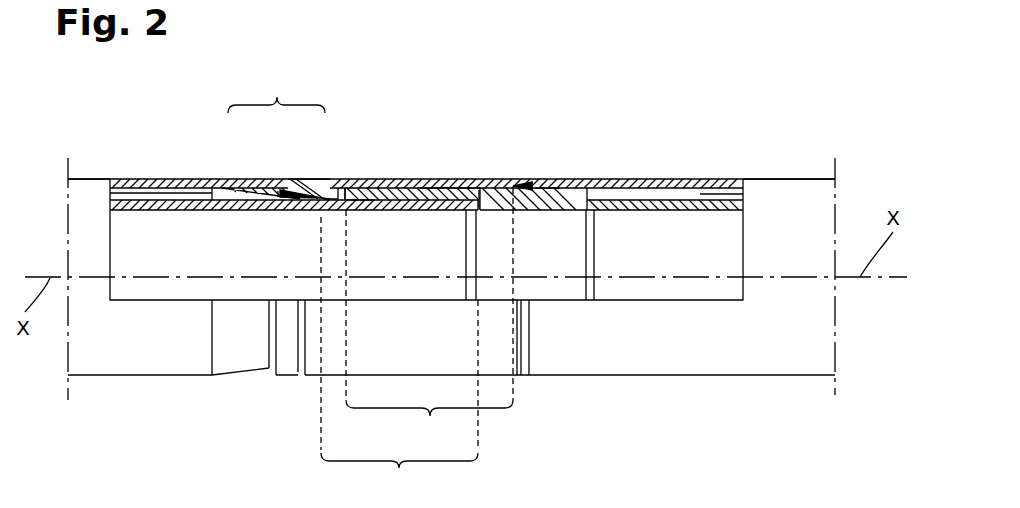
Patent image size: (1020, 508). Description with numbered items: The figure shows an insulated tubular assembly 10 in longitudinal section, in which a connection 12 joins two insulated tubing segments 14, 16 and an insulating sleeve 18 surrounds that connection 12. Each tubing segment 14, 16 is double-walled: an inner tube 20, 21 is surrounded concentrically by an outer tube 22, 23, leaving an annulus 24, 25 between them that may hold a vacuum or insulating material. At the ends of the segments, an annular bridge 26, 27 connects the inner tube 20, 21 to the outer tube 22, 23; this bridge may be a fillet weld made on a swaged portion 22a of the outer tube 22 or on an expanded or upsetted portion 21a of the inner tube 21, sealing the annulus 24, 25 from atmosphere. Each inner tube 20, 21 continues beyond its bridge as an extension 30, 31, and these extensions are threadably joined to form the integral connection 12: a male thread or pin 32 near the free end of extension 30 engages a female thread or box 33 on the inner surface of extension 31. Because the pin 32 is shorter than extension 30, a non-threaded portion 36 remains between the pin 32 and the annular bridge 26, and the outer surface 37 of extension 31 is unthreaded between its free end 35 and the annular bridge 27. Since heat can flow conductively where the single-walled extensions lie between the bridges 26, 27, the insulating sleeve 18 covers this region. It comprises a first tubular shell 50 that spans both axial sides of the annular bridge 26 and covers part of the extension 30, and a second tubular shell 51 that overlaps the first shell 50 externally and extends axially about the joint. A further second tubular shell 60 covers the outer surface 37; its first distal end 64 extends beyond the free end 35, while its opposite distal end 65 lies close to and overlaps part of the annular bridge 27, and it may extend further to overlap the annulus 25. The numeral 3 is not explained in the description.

The insulated tubular assembly 10 is at (700, 429).
The connection 12 is at (363, 172).
The first insulated tubing segment 14 is at (117, 163).
The second insulated tubing segment 16 is at (790, 160).
The insulating sleeve 18 is at (276, 89).
The inner tube 20 is at (133, 208).
The inner tube 21 is at (705, 208).
The expanded or upsetted portion 21a is at (478, 212).
The outer tube 22 is at (150, 183).
The swaged portion 22a is at (230, 185).
The outer tube 23 is at (655, 183).
The annulus 24 is at (117, 193).
The annulus 25 is at (743, 195).
The annular bridge 26 is at (300, 210).
The annular bridge 27 is at (540, 186).
The coupling block 3 is at (487, 212).
The extension 30 is at (399, 358).
The extension 31 is at (429, 315).
The pin 32 is at (405, 208).
The box 33 is at (435, 185).
The free end 35 is at (360, 210).
The non-threaded portion 36 is at (330, 213).
The outer surface 37 is at (460, 185).
The first tubular shell 50 is at (272, 181).
The second tubular shell 51 is at (340, 182).
The second tubular shell 60 is at (507, 180).
The first distal end 64 is at (310, 180).
The opposite distal end 65 is at (527, 180).